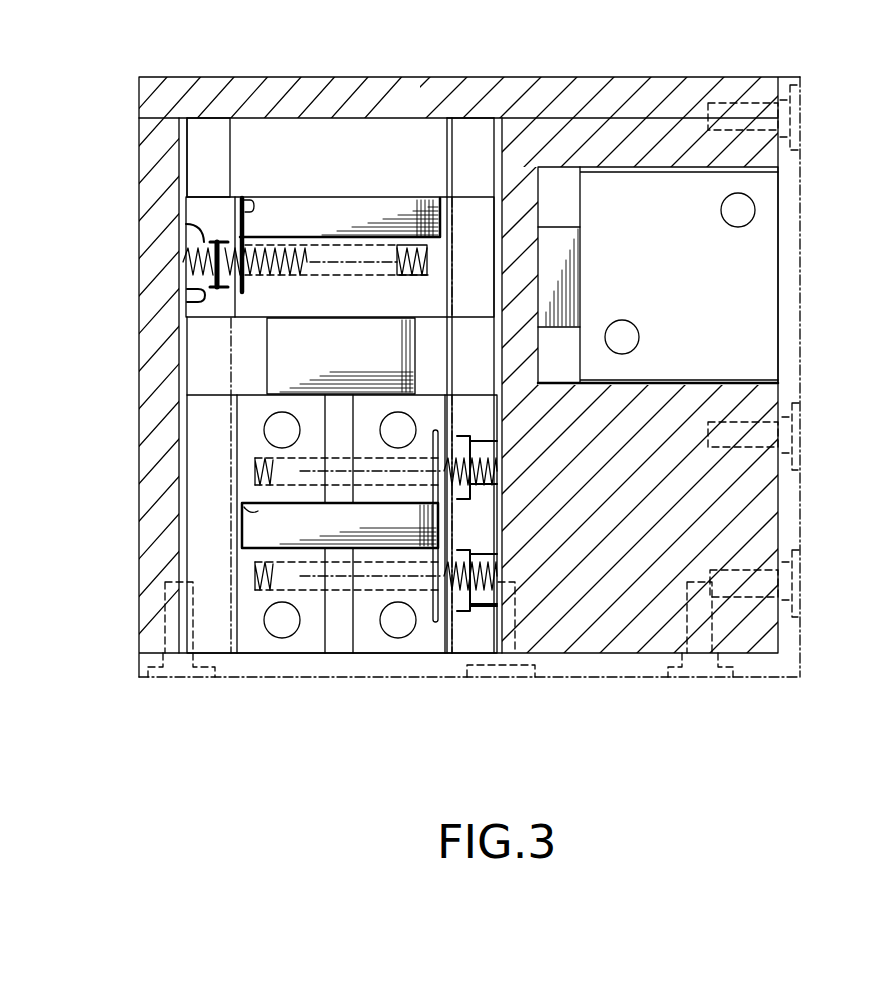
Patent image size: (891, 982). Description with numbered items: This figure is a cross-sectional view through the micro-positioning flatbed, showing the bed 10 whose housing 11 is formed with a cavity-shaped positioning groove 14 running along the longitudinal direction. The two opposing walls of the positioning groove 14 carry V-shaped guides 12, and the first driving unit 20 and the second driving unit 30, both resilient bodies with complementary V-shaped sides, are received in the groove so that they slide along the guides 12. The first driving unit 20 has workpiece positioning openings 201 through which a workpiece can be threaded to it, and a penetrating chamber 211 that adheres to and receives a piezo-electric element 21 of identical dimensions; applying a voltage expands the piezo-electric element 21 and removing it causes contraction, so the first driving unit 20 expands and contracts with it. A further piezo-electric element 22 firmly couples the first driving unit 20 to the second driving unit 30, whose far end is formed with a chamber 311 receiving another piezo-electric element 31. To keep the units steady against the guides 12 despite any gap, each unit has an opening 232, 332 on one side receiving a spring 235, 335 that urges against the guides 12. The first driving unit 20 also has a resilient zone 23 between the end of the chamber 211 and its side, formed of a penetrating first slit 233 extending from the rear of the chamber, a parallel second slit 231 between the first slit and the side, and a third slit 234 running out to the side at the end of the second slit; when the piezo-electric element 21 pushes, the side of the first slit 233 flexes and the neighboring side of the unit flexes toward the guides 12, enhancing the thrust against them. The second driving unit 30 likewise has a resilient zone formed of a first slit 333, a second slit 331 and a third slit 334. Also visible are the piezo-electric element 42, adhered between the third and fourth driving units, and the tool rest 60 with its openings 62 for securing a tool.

The bed 10 is at (550, 64).
The housing 11 is at (415, 77).
The V-shaped guides 12 is at (182, 547).
The positioning groove 14 is at (198, 389).
The first driving unit 20 is at (250, 653).
The workpiece positioning openings 201 is at (398, 625).
The piezo-electric element 21 is at (242, 523).
The penetrating chamber 211 is at (242, 503).
The piezo-electric element 22 is at (267, 366).
The resilient zone 23 is at (501, 516).
The second slit 231 is at (458, 605).
The opening 232 is at (337, 590).
The first slit 233 is at (435, 623).
The third slit 234 is at (478, 612).
The spring 235 is at (275, 587).
The second driving unit 30 is at (213, 318).
The piezo-electric element 31 is at (302, 212).
The chamber 311 is at (249, 200).
The second slit 331 is at (186, 218).
The opening 332 is at (200, 240).
The first slit 333 is at (246, 290).
The third slit 334 is at (189, 298).
The spring 335 is at (408, 240).
The piezo-electric element 42 is at (556, 233).
The tool rest 60 is at (780, 285).
The openings 62 is at (756, 210).